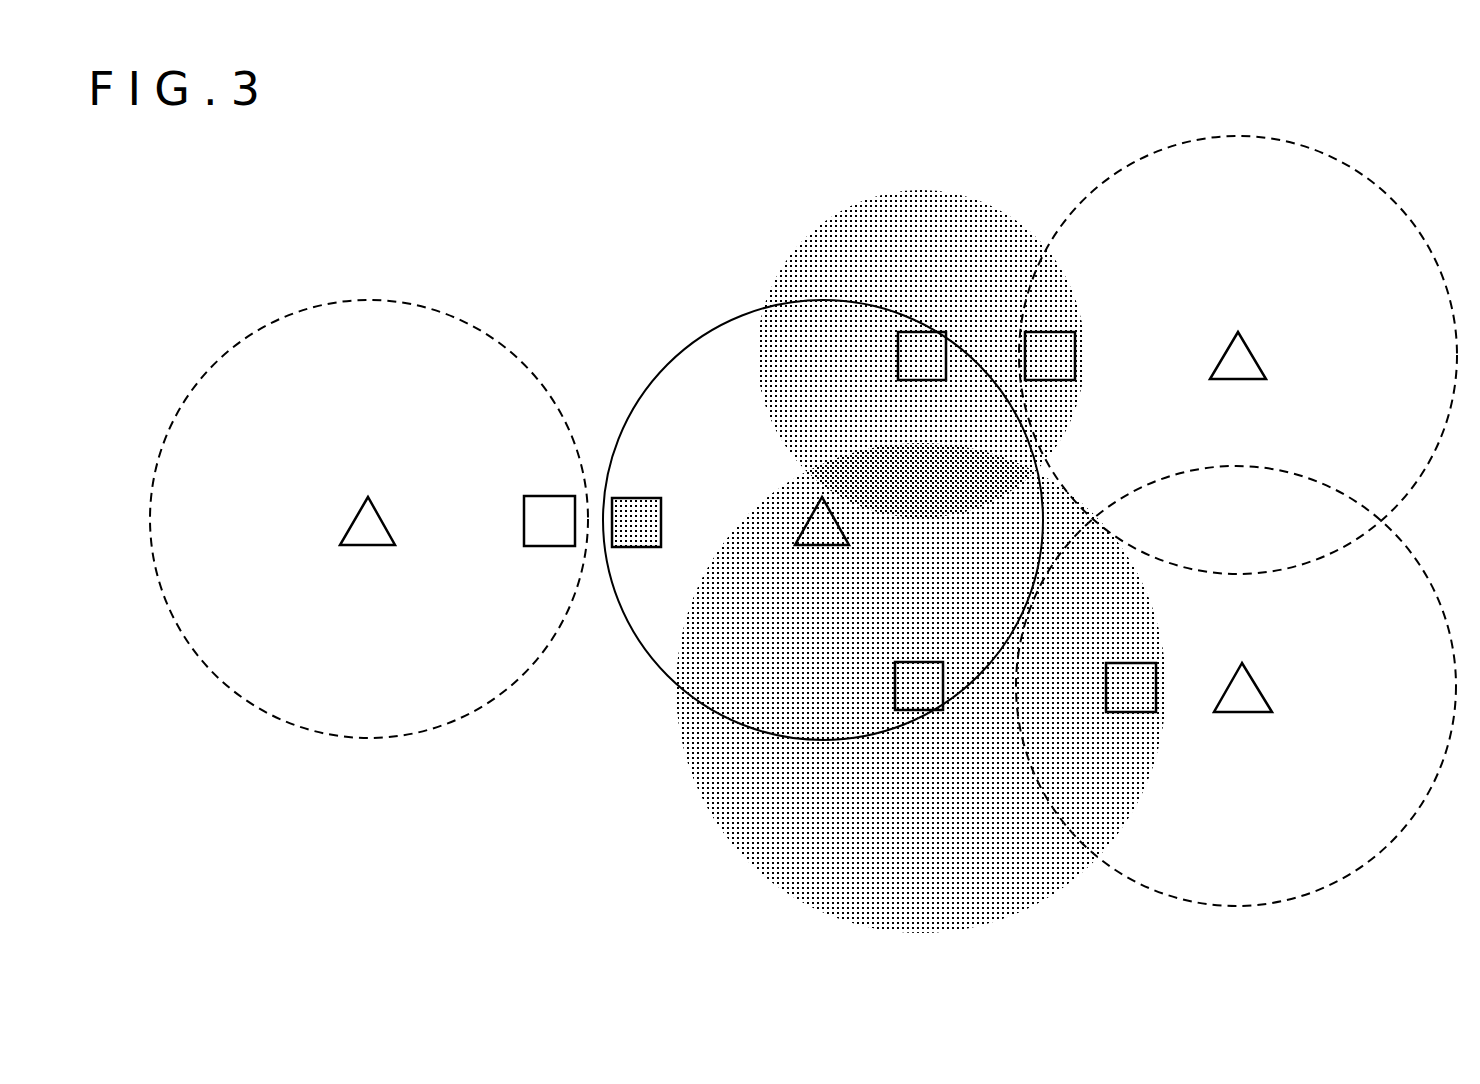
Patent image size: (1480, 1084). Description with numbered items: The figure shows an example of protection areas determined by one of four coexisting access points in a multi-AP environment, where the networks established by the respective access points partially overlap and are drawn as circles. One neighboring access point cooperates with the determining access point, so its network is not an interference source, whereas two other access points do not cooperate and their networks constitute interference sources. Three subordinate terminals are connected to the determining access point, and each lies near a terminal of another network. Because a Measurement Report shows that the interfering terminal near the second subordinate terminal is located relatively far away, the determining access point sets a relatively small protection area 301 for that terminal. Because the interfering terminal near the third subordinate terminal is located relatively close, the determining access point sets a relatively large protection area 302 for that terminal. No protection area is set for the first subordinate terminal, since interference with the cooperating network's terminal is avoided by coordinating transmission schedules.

The protection area 301 is at (904, 209).
The protection area 302 is at (748, 843).